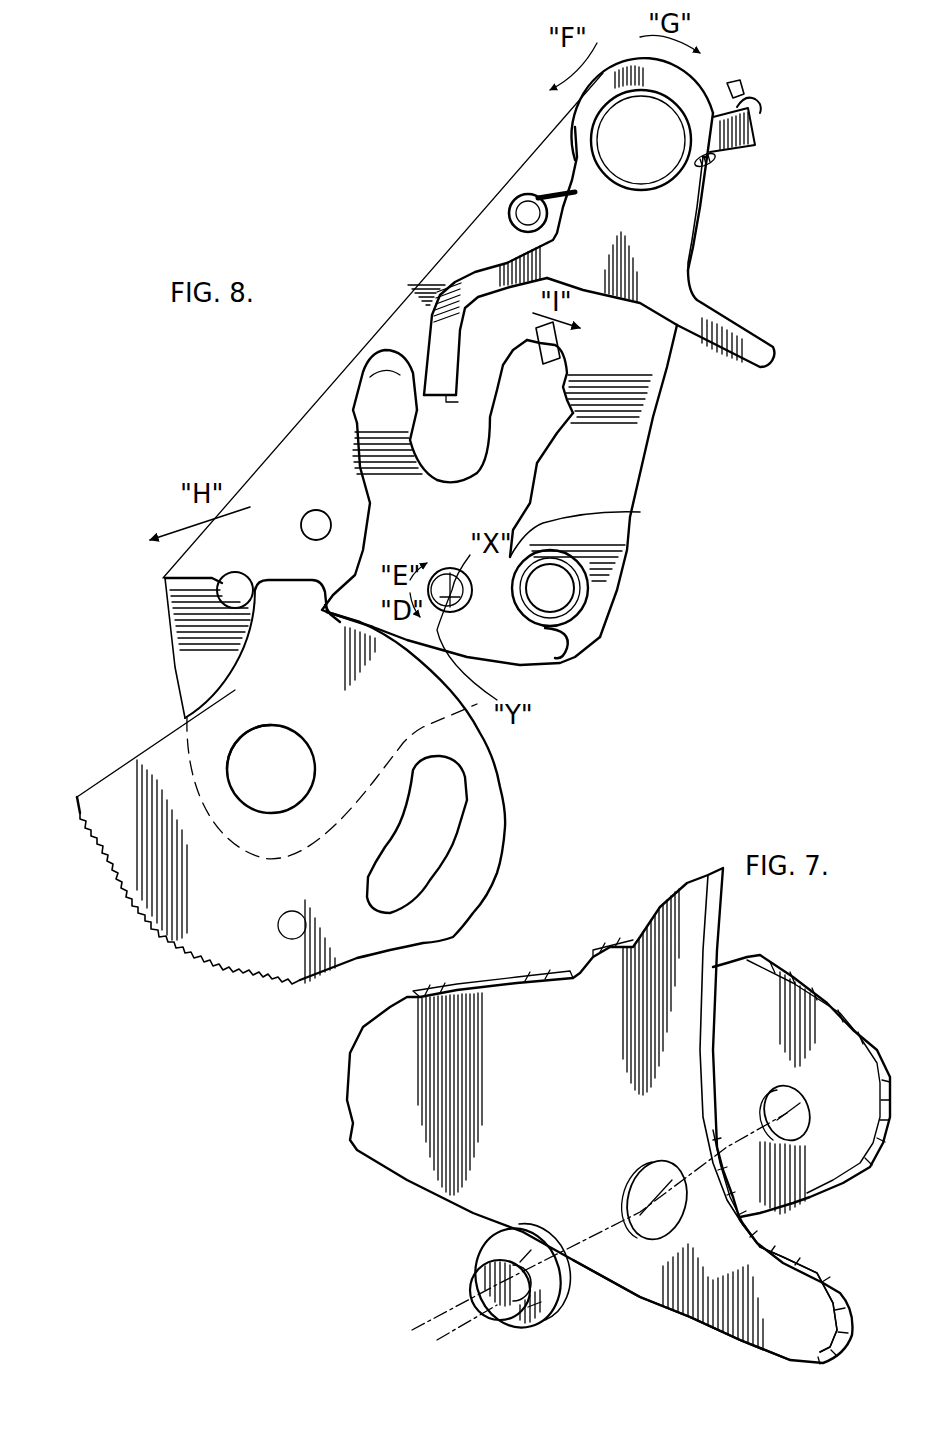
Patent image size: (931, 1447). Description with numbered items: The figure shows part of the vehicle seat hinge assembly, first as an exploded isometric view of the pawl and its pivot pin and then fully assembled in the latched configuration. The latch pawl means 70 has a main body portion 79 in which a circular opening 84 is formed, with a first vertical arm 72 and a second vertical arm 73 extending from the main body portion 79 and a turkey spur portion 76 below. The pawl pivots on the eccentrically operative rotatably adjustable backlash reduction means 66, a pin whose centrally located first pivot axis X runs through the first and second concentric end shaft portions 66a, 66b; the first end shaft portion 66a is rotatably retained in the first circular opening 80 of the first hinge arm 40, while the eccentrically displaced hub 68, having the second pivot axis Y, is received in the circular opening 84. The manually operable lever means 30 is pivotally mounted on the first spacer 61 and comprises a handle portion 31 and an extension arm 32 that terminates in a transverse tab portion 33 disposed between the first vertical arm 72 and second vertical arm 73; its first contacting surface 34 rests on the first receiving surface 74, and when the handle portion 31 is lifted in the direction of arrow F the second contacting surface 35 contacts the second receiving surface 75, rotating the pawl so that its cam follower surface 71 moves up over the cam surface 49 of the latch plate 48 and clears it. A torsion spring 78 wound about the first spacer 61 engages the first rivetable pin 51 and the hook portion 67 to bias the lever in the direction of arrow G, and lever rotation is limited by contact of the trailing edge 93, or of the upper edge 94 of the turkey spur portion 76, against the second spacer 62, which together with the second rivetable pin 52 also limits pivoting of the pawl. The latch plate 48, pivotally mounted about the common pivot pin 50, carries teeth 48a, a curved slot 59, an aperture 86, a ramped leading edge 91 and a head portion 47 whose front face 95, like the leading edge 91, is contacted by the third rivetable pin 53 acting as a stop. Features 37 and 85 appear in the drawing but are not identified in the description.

In FIG. 8, the manually operable lever means 30 is at (685, 210).
In FIG. 8, the handle portion 31 is at (748, 345).
In FIG. 8, the extension arm 32 is at (487, 278).
In FIG. 8, the transverse tab portion 33 is at (468, 411).
In FIG. 8, the first contacting surface 34 is at (420, 345).
In FIG. 8, the second contacting surface 35 is at (437, 400).
In FIG. 8, the boss 37 is at (647, 192).
In FIG. 8, the first hinge arm 40 is at (633, 427).
In FIG. 8, the head portion 47 is at (280, 582).
In FIG. 8, the latch plate 48 is at (103, 790).
In FIG. 8, the teeth 48a is at (170, 933).
In FIG. 8, the cam surface 49 is at (313, 607).
In FIG. 8, the common pivot pin 50 is at (293, 762).
In FIG. 8, the first rivetable pin 51 is at (522, 210).
In FIG. 8, the second rivetable pin 52 is at (315, 522).
In FIG. 8, the third rivetable pin 53 is at (168, 583).
In FIG. 8, the curved slot 59 is at (460, 843).
In FIG. 8, the first spacer 61 is at (660, 117).
In FIG. 8, the second spacer 62 is at (577, 593).
In FIG. 8, the eccentrically operative rotatably adjustable backlash reduction means 66 is at (450, 573).
In FIG. 7, the eccentrically operative rotatably adjustable backlash reduction means 66 is at (473, 1247).
In FIG. 7, the first concentric end shaft portion 66a is at (537, 1240).
In FIG. 7, the second concentric end shaft portion 66b is at (470, 1280).
In FIG. 8, the hook portion 67 is at (745, 90).
In FIG. 8, the eccentrically displaced hub 68 is at (463, 600).
In FIG. 7, the eccentrically displaced hub 68 is at (560, 1300).
In FIG. 8, the latch pawl means 70 is at (363, 522).
In FIG. 7, the latch pawl means 70 is at (687, 900).
In FIG. 8, the cam follower surface 71 is at (323, 597).
In FIG. 8, the first vertical arm 72 is at (372, 415).
In FIG. 8, the second vertical arm 73 is at (550, 426).
In FIG. 8, the first receiving surface 74 is at (410, 395).
In FIG. 8, the second receiving surface 75 is at (539, 395).
In FIG. 8, the turkey spur portion 76 is at (553, 650).
In FIG. 7, the turkey spur portion 76 is at (767, 1323).
In FIG. 8, the torsion spring 78 is at (545, 188).
In FIG. 7, the main body portion 79 is at (600, 1115).
In FIG. 7, the first circular opening 80 is at (800, 1095).
In FIG. 8, the circular opening 84 is at (437, 633).
In FIG. 7, the circular opening 84 is at (650, 1162).
In FIG. 8, the edge 85 is at (250, 732).
In FIG. 8, the aperture 86 is at (260, 817).
In FIG. 8, the ramped leading edge 91 is at (147, 758).
In FIG. 8, the trailing edge 93 is at (640, 512).
In FIG. 7, the trailing edge 93 is at (707, 1050).
In FIG. 7, the upper edge 94 is at (780, 1273).
In FIG. 8, the front face 95 is at (267, 607).